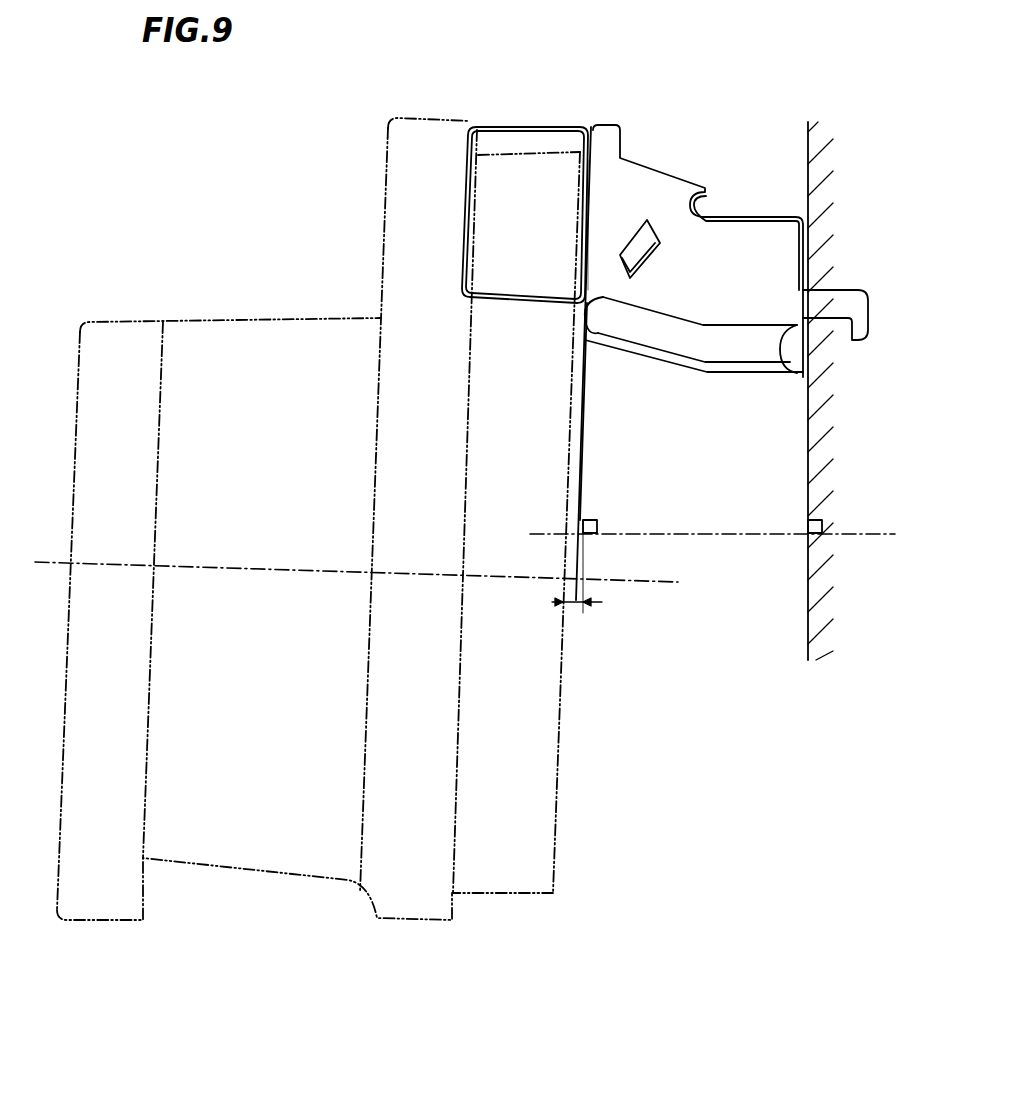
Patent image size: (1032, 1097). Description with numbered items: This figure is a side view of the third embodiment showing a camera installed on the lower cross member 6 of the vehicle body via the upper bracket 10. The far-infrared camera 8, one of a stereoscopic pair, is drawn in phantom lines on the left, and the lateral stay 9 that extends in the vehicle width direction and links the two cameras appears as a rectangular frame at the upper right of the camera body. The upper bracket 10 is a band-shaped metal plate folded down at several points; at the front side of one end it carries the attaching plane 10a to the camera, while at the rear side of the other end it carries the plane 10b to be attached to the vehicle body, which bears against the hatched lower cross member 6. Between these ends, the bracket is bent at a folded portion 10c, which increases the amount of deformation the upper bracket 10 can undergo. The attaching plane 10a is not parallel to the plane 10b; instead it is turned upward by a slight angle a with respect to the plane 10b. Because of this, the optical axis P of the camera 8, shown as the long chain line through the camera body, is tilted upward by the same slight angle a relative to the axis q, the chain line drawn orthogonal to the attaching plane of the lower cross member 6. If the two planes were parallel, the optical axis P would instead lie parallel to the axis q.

The lower cross member 6 is at (808, 636).
The far-infrared camera 8 is at (250, 320).
The lateral stay 9 is at (557, 127).
The upper bracket 10 is at (677, 172).
The attaching plane to the camera 10a is at (580, 210).
The plane to be attached to the vehicle body 10b is at (810, 267).
The folded portion 10c is at (685, 305).
The optical axis of the camera P is at (273, 572).
The axis orthogonal to the attaching plane of the lower cross member q is at (733, 534).
The slight angle a is at (577, 577).